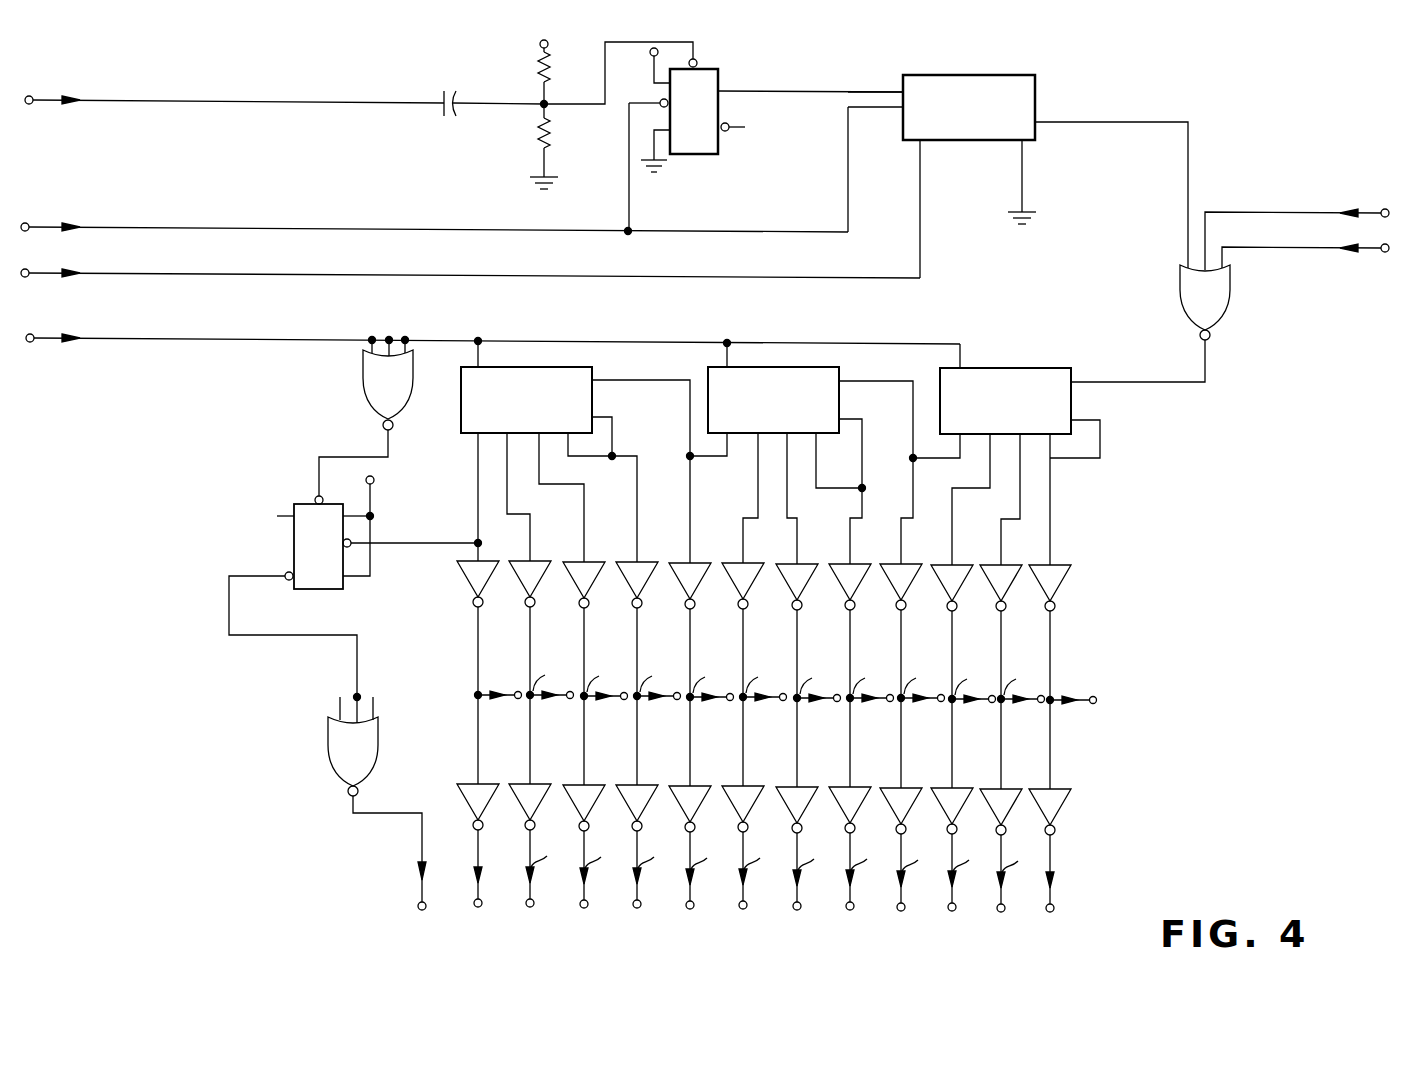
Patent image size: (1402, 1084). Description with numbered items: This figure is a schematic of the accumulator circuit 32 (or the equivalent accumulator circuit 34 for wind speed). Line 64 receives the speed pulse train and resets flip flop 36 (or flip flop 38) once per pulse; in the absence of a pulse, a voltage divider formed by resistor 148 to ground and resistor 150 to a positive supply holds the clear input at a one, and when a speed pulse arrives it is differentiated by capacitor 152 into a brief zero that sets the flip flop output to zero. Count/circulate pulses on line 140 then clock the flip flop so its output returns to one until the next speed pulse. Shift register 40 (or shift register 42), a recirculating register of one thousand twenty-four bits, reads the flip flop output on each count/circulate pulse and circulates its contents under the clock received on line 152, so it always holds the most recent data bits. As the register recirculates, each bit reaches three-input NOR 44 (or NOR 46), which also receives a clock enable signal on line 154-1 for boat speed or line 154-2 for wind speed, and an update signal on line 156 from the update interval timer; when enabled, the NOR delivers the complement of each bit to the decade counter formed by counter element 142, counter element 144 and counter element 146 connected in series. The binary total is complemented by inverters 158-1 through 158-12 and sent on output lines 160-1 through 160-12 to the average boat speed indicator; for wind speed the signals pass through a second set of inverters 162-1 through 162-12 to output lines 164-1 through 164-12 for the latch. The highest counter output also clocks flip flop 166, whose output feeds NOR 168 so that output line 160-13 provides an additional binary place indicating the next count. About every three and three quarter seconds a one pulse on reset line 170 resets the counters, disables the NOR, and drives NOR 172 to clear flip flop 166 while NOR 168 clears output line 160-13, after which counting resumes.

The accumulator circuit 32 is at (902, 736).
The accumulator circuit 34 is at (1208, 714).
The flip flop 36 is at (723, 119).
The flip flop 38 is at (690, 154).
The shift register 40 is at (1018, 170).
The shift register 42 is at (1022, 119).
The NOR 44 is at (1206, 318).
The NOR 46 is at (1225, 312).
The line 64 is at (57, 99).
The count/circulate line 140 is at (50, 226).
The decade counter 142 is at (1024, 415).
The counter element 144 is at (792, 414).
The counter element 146 is at (545, 414).
The resistor 148 is at (538, 135).
The resistor 150 is at (538, 68).
The capacitor 152 is at (444, 92).
The line 154-1 is at (1297, 209).
The line 154-2 is at (1367, 210).
The update line 156 is at (1367, 252).
The inverter 158-1 is at (1064, 573).
The inverter 158-12 is at (474, 594).
The output line 160-1 is at (1058, 706).
The output line 160-12 is at (477, 698).
The output line 160-13 is at (420, 854).
The inverter 162-1 is at (1064, 797).
The inverter 162-12 is at (478, 785).
The output line 164-1 is at (1052, 850).
The output line 164-12 is at (477, 866).
The flip flop 166 is at (328, 555).
The NOR 168 is at (371, 763).
The reset line 170 is at (52, 336).
The NOR 172 is at (406, 396).